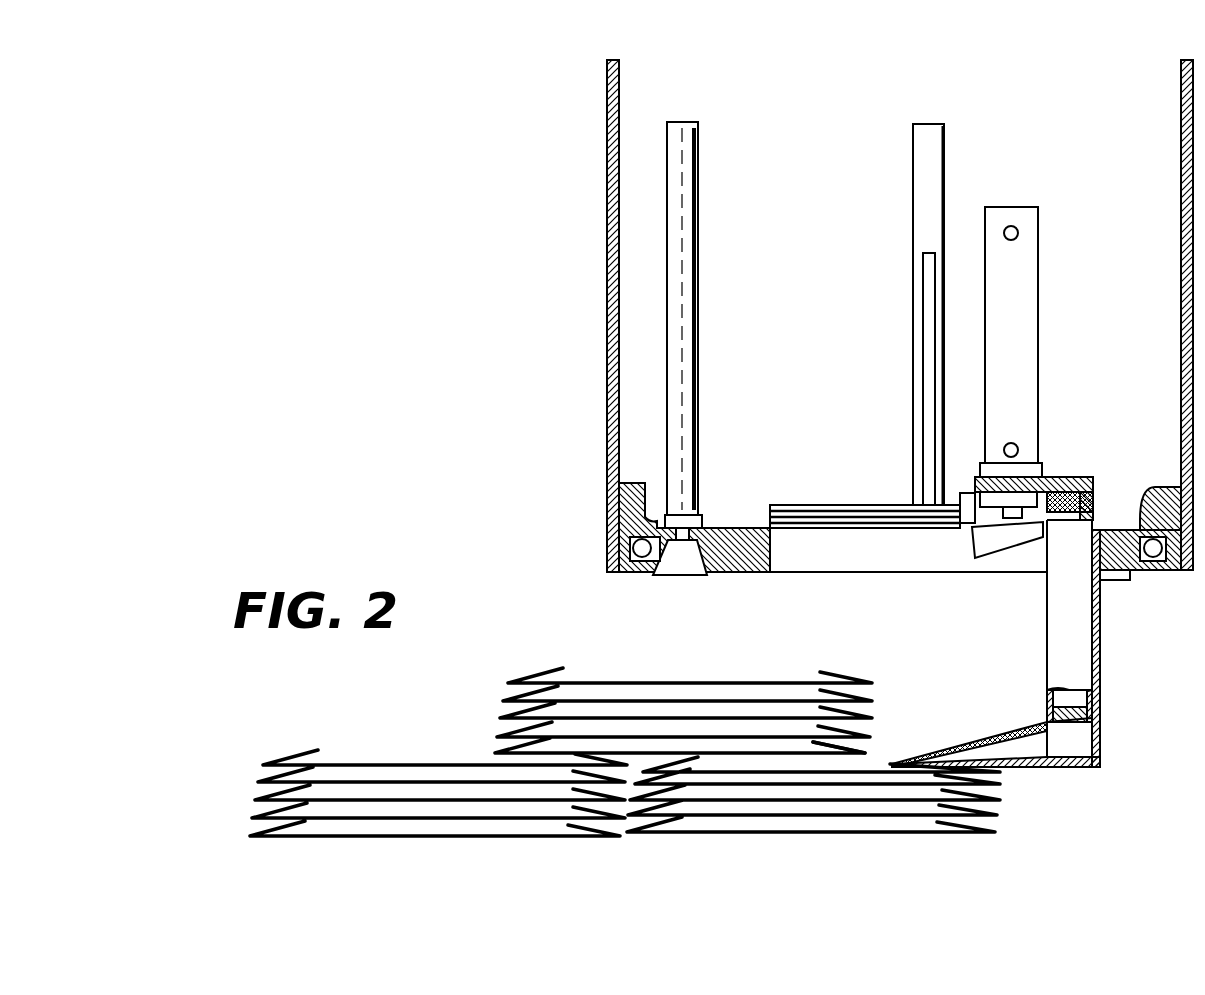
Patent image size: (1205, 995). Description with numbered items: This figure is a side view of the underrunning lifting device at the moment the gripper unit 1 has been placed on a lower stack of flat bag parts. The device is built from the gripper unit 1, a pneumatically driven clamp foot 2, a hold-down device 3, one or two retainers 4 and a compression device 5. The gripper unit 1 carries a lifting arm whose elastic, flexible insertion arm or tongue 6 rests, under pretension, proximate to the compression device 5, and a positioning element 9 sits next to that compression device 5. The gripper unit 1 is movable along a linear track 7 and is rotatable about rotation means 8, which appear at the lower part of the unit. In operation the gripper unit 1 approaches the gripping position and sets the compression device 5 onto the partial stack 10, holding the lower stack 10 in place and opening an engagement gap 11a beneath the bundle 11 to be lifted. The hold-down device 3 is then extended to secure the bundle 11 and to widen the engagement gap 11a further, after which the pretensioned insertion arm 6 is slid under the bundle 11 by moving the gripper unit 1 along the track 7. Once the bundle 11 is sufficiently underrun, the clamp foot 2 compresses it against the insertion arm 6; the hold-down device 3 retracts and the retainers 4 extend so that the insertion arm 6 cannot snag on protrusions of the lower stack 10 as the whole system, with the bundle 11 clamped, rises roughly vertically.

The gripper unit 1 is at (1076, 464).
The clamp foot 2 is at (1008, 540).
The hold-down device 3 is at (698, 206).
The retainer 4 is at (913, 204).
The compression device 5 is at (1100, 737).
The insertion arm 6 is at (1003, 742).
The linear track 7 is at (900, 505).
The rotation means 8 is at (632, 540).
The positioning element 9 is at (1062, 613).
The partial stack 10 is at (722, 802).
The bundle 11 is at (663, 683).
The engagement gap 11a is at (867, 762).